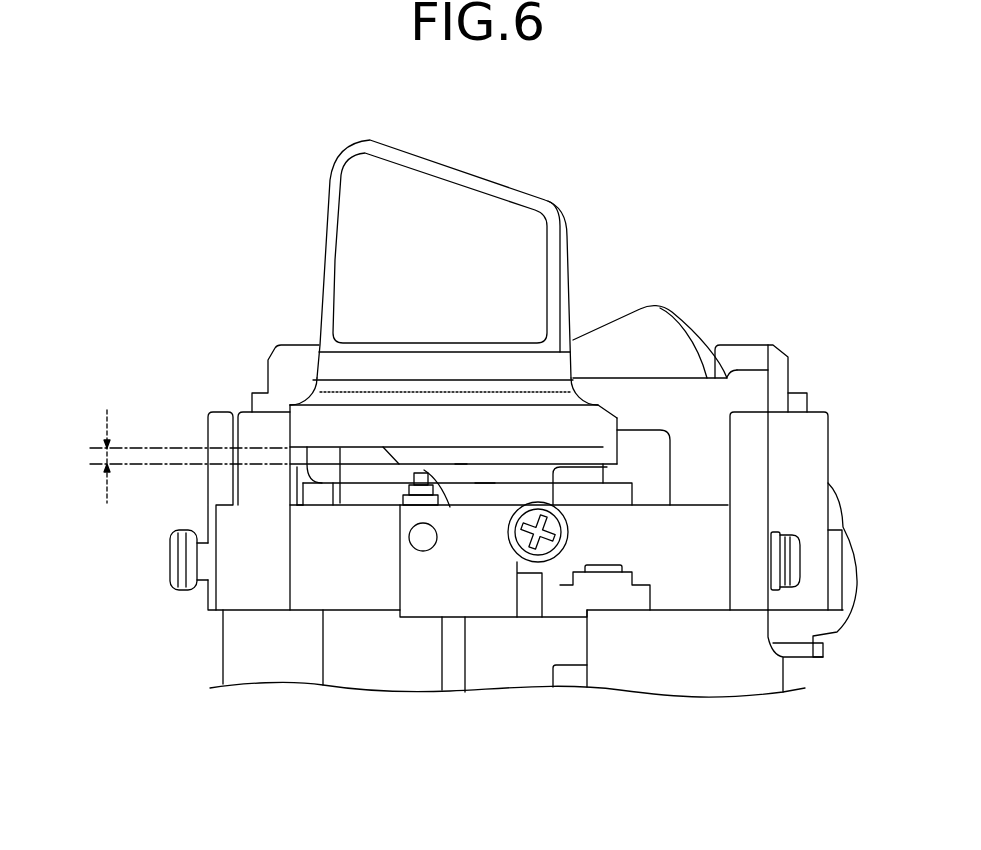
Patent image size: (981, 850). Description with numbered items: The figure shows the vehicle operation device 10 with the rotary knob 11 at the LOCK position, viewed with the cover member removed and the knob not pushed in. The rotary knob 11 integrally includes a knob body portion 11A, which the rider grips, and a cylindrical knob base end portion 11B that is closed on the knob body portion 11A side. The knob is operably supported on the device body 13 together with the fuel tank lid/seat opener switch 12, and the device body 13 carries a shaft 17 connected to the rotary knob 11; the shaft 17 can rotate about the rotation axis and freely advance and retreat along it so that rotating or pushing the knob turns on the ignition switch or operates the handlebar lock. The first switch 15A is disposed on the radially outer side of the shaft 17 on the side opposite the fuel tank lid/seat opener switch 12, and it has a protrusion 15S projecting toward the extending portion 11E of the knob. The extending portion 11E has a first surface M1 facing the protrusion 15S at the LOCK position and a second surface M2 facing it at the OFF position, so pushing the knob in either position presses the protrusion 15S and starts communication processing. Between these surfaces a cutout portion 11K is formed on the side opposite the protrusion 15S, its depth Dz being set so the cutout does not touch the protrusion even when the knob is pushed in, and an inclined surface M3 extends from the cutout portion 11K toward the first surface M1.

The vehicle operation device 10 is at (138, 135).
The rotary knob 11 is at (330, 146).
The knob body portion 11A is at (360, 280).
The knob base end portion 11B is at (315, 398).
The cutout portion 11K is at (340, 503).
The extending portion 11E is at (450, 507).
The fuel tank lid/seat opener switch 12 is at (682, 298).
The device body 13 is at (797, 380).
The protrusion 15S is at (412, 478).
The first switch 15A is at (413, 628).
The shaft 17 is at (483, 490).
The first surface M1 is at (461, 476).
The second surface M2 is at (297, 505).
The inclined surface M3 is at (381, 464).
The depth of the cutout portion Dz is at (173, 456).